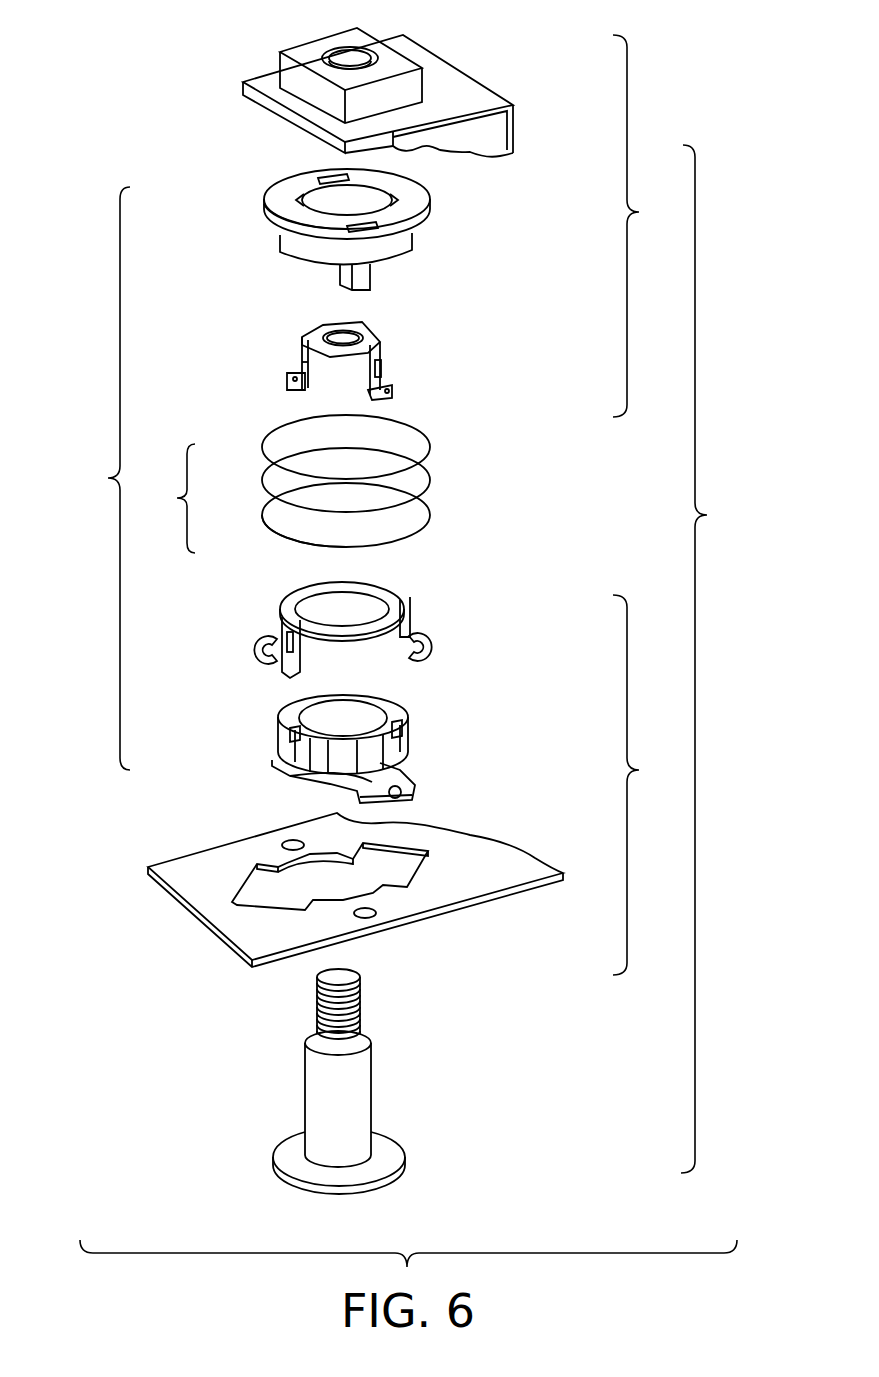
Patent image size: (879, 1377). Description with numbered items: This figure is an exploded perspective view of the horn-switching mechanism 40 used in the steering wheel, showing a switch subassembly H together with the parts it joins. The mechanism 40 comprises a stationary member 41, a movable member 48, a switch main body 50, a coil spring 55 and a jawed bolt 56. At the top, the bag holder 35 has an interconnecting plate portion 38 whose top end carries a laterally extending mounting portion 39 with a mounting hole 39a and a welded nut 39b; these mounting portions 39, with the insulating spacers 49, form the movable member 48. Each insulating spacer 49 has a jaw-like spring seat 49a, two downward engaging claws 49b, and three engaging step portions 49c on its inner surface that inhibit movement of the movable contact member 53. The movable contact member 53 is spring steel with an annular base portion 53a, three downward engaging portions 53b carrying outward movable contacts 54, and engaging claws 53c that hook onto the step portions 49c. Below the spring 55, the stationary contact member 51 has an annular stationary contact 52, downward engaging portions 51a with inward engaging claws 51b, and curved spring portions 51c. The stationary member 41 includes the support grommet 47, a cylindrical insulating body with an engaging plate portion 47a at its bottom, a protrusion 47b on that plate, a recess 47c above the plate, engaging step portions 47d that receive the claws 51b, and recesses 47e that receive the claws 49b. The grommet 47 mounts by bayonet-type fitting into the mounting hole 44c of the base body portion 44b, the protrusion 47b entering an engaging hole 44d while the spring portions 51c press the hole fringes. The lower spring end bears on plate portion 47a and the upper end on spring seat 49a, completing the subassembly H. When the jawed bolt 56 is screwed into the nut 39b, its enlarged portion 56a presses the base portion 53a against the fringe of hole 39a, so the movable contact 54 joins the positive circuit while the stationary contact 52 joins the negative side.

The bag holder 35 is at (410, 106).
The interconnecting plate portion 38 is at (517, 125).
The mounting portion 39 is at (385, 64).
The mounting hole 39a is at (360, 55).
The nut 39b is at (302, 50).
The movable member 48 is at (640, 226).
The insulating spacer 49 is at (368, 231).
The spring seat 49a is at (268, 222).
The engaging claw 49b is at (362, 273).
The engaging step portion 49c is at (327, 217).
The movable contact member 53 is at (380, 383).
The annular base portion 53a is at (323, 323).
The engaging portion 53b is at (302, 338).
The engaging claw 53c is at (302, 362).
The movable contact 54 is at (362, 358).
The coil spring 55 is at (376, 502).
The switch main body 50 is at (169, 498).
The stationary contact 52 is at (307, 590).
The switch subassembly H is at (107, 478).
The stationary contact member 51 is at (362, 614).
The engaging portion 51a is at (404, 590).
The engaging claw 51b is at (285, 628).
The spring portion 51c is at (260, 648).
The support grommet 47 is at (360, 759).
The engaging plate portion 47a is at (393, 775).
The protrusion 47b is at (413, 793).
The recess 47c is at (372, 782).
The engaging step portion 47d is at (297, 742).
The recess 47e is at (303, 703).
The base body portion 44b is at (355, 899).
The mounting hole 44c is at (283, 898).
The engaging hole 44d is at (287, 842).
The stationary member 41 is at (641, 785).
The horn-switching mechanism 40 is at (708, 659).
The jawed bolt 56 is at (379, 1081).
The enlarged portion 56a is at (373, 1037).